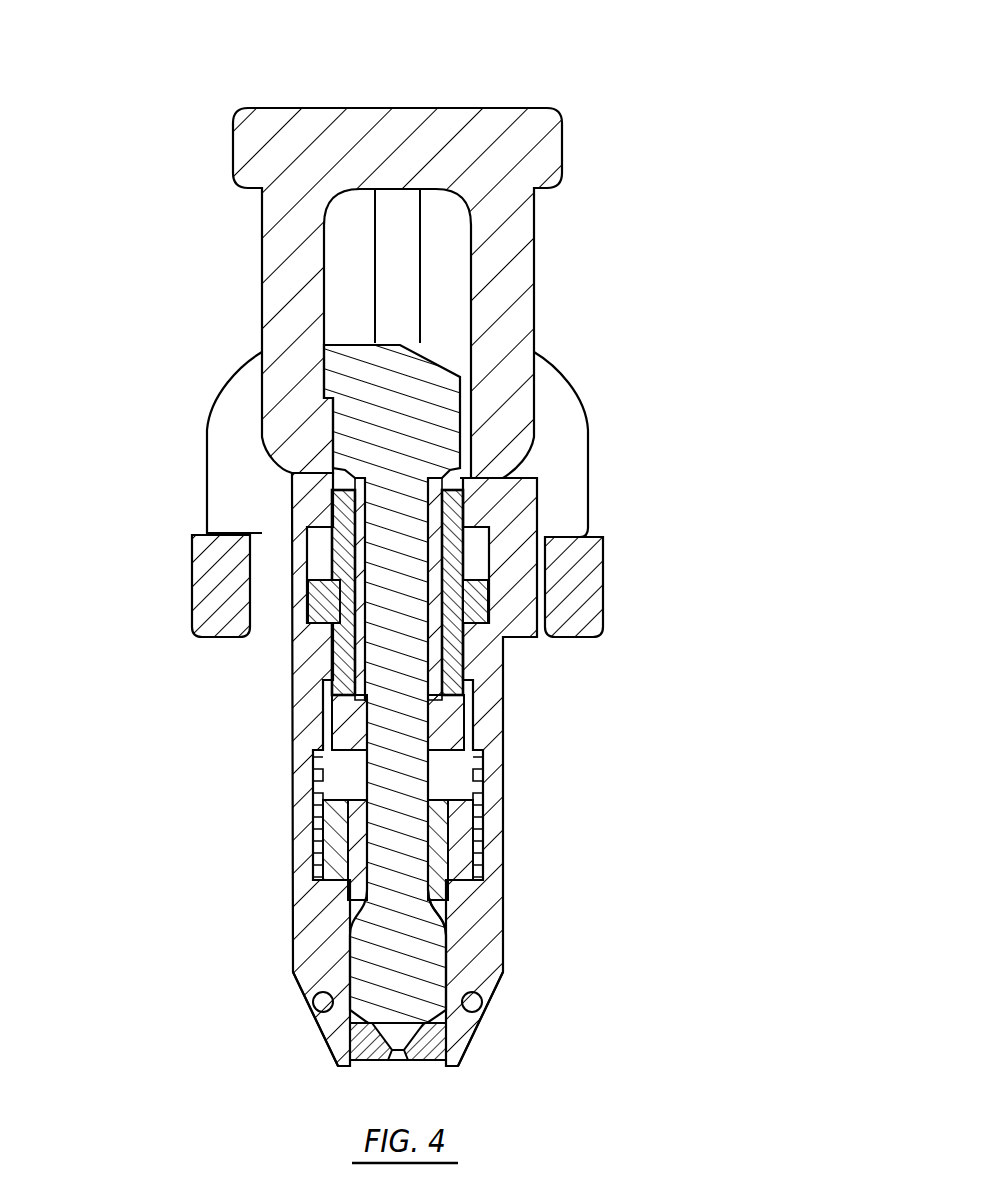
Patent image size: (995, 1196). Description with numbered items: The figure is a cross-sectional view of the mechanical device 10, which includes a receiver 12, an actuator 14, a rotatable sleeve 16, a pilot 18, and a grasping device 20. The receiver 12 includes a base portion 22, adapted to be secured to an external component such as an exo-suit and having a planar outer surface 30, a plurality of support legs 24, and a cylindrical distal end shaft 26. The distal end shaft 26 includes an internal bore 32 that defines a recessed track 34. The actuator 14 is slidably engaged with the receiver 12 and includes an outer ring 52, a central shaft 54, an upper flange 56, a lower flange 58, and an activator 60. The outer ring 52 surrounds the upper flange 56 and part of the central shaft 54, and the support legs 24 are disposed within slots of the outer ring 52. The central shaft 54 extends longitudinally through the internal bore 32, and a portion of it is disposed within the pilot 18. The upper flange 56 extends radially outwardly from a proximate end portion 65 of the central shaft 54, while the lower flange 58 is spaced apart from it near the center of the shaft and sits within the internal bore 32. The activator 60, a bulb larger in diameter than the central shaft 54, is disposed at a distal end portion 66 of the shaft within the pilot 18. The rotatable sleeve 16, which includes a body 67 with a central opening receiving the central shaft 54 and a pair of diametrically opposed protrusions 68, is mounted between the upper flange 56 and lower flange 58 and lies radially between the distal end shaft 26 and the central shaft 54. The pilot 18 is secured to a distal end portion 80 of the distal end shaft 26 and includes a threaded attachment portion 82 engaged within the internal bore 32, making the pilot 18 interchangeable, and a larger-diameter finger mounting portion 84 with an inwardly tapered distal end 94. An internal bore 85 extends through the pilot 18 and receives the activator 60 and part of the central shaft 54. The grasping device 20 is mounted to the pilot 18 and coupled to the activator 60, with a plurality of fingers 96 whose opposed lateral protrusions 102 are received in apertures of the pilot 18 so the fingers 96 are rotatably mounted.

The mechanical device 10 is at (213, 106).
The receiver 12 is at (409, 253).
The actuator 14 is at (407, 489).
The rotatable sleeve 16 is at (333, 548).
The pilot 18 is at (293, 958).
The grasping device 20 is at (367, 1068).
The base portion 22 is at (522, 138).
The support legs 24 is at (505, 287).
The distal end shaft 26 is at (406, 783).
The outer surface 30 is at (497, 108).
The internal bore 32 is at (447, 770).
The recessed track 34 is at (470, 538).
The outer ring 52 is at (215, 568).
The central shaft 54 is at (435, 684).
The upper flange 56 is at (450, 433).
The lower flange 58 is at (340, 712).
The activator 60 is at (387, 933).
The proximate end portion 65 is at (445, 482).
The distal end portion 66 is at (427, 895).
The body 67 is at (455, 660).
The protrusions 68 is at (478, 600).
The distal end portion 80 is at (493, 850).
The attachment portion 82 is at (340, 817).
The finger mounting portion 84 is at (307, 900).
The internal bore 85 is at (432, 870).
The inwardly tapered distal end 94 is at (323, 1040).
The fingers 96 is at (360, 1055).
The lateral protrusions 102 is at (477, 1002).